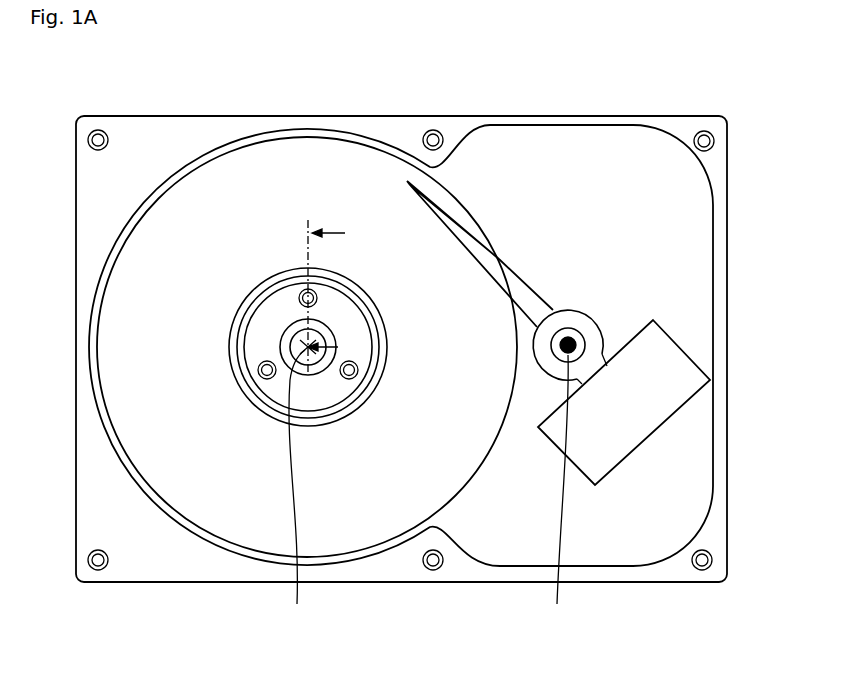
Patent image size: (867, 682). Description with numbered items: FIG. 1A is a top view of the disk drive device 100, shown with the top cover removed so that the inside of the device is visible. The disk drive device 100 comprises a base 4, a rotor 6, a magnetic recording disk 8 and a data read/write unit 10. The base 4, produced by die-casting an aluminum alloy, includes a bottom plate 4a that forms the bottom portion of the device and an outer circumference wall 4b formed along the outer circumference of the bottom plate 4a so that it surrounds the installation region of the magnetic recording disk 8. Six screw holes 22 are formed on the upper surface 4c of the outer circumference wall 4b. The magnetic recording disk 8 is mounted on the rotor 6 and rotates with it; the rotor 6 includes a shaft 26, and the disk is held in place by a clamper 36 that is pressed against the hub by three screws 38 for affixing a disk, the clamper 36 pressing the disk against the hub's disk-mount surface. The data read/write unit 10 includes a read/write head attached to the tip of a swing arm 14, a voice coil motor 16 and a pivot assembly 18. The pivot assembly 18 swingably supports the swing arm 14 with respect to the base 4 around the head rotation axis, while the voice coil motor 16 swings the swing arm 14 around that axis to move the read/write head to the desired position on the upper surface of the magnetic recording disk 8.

The disk drive device 100 is at (434, 676).
The base 4 is at (730, 213).
The bottom plate 4a is at (520, 155).
The outer circumference wall 4b is at (165, 140).
The upper surface 4c is at (76, 203).
The screw holes 22 is at (98, 129).
The magnetic recording disk 8 is at (305, 172).
The shaft 26 is at (312, 352).
The rotor 6 is at (300, 345).
The screws for affixing a disk 38 is at (300, 295).
The clamper 36 is at (265, 372).
The data read/write unit 10 is at (611, 333).
The swing arm 14 is at (532, 292).
The pivot assembly 18 is at (590, 332).
The voice coil motor 16 is at (655, 402).